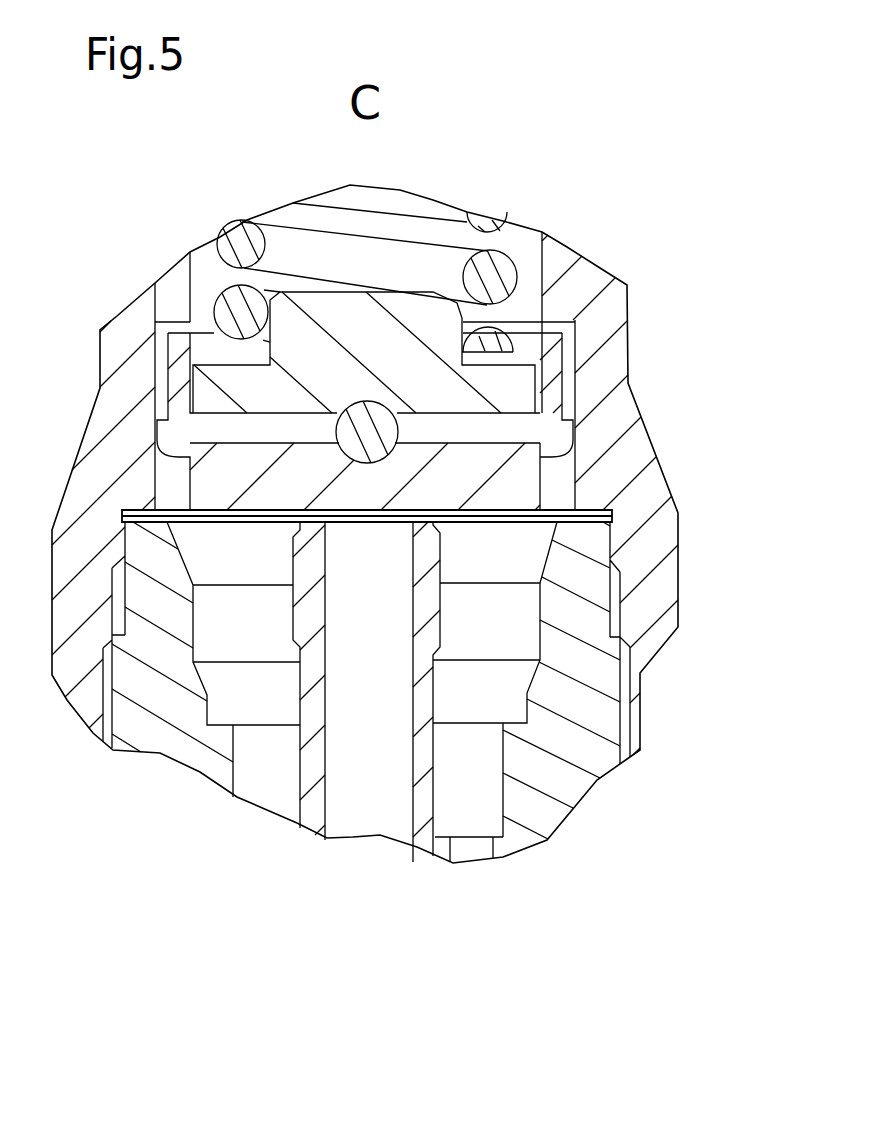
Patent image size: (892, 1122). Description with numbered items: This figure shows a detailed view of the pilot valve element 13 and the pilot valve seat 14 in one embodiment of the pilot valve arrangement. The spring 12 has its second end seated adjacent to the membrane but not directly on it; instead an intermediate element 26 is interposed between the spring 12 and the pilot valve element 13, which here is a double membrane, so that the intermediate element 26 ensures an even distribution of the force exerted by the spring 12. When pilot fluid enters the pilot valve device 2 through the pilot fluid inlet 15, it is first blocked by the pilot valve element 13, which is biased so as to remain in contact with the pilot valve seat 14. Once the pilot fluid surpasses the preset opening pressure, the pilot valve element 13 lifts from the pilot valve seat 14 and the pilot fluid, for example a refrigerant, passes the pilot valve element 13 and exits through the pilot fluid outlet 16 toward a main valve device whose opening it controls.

The pilot valve device 2 is at (603, 320).
The spring 12 is at (492, 273).
The pilot valve element 13 is at (610, 510).
The pilot valve seat 14 is at (420, 527).
The pilot fluid inlet 15 is at (470, 850).
The pilot fluid outlet 16 is at (358, 817).
The intermediate element 26 is at (210, 477).